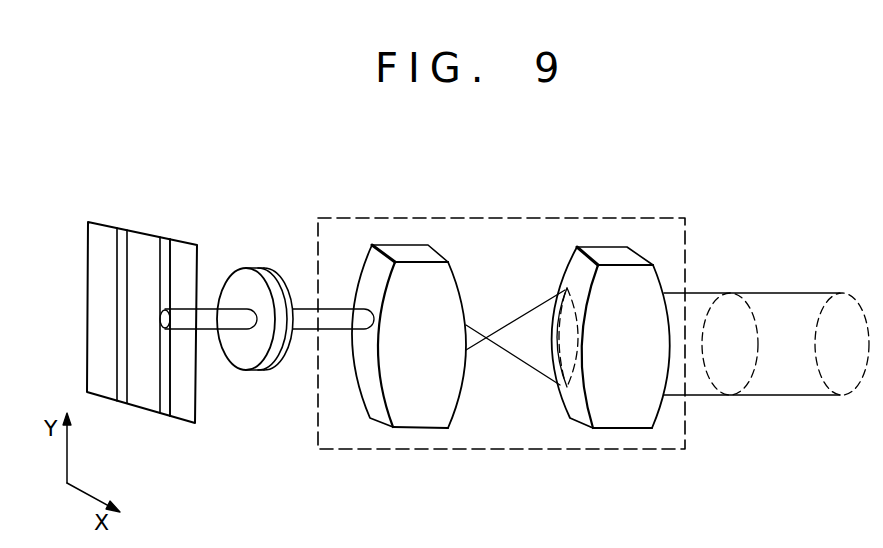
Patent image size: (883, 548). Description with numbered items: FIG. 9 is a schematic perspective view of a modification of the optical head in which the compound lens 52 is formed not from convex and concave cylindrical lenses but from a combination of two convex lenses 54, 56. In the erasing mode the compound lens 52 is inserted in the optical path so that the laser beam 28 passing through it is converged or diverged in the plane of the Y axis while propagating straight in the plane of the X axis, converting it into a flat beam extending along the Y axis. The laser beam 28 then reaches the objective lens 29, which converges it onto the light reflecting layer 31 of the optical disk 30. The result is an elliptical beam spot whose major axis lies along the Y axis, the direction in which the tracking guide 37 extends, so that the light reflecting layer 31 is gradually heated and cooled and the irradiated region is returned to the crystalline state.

The laser beam 28 is at (773, 397).
The objective lens 29 is at (248, 358).
The optical disk 30 is at (143, 402).
The light reflecting layer 31 is at (182, 412).
The tracking guide 37 is at (170, 246).
The compound lens 52 is at (588, 218).
The convex lens 54 is at (432, 257).
The convex lens 56 is at (640, 260).